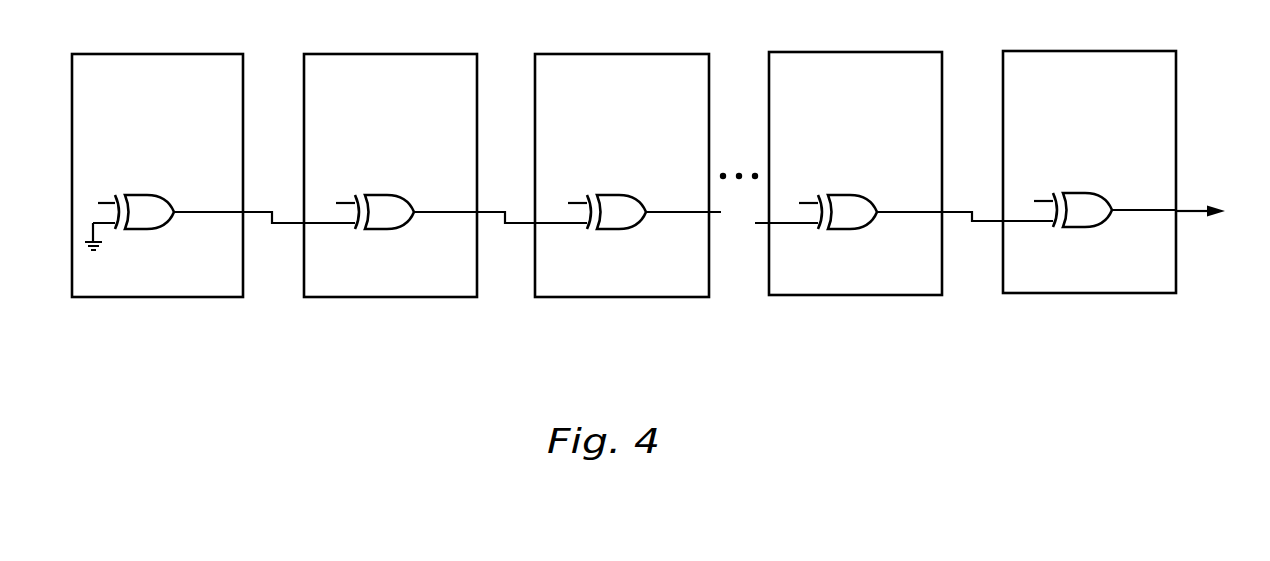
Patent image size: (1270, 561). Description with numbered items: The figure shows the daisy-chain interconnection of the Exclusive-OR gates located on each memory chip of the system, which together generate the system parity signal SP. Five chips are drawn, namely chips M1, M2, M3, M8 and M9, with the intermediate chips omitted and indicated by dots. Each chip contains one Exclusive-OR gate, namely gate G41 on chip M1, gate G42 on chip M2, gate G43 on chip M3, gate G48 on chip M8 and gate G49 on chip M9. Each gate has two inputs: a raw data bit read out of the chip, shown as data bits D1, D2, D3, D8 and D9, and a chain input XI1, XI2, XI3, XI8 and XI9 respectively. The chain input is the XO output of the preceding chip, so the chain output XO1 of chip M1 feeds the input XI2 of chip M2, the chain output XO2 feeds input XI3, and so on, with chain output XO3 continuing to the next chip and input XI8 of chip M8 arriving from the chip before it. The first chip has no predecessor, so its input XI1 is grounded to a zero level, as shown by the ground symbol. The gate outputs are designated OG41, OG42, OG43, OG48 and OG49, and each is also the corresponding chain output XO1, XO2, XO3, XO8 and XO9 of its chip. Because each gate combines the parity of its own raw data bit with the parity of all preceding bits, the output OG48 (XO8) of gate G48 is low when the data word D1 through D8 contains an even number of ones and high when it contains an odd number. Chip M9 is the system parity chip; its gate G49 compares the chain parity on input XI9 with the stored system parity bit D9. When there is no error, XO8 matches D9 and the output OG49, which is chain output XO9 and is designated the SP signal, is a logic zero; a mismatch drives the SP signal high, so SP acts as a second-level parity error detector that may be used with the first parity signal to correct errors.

The memory chip M1 is at (157, 175).
The memory chip M2 is at (390, 175).
The memory chip M3 is at (622, 175).
The memory chip M8 is at (855, 173).
The system parity chip M9 is at (1089, 172).
The Exclusive-OR gate G41 is at (137, 202).
The Exclusive-OR gate G42 is at (376, 202).
The Exclusive-OR gate G43 is at (608, 202).
The Exclusive-OR gate G48 is at (839, 202).
The Exclusive-OR gate G49 is at (1074, 200).
The raw data bit D1 is at (96, 203).
The raw data bit D2 is at (332, 203).
The raw data bit D3 is at (564, 203).
The raw data bit D8 is at (795, 203).
The system parity bit D9 is at (1030, 201).
The XI input XI1 is at (108, 225).
The XI input XI2 is at (335, 223).
The XI input XI3 is at (567, 223).
The XI input XI8 is at (798, 223).
The XI input XI9 is at (1033, 221).
The gate output OG41 is at (264, 206).
The gate output OG42 is at (500, 206).
The gate output OG43 is at (683, 201).
The gate output OG48 is at (965, 205).
The gate output OG49 is at (1144, 199).
The XO output XO1 is at (208, 227).
The XO output XO2 is at (445, 227).
The XO output XO3 is at (677, 227).
The XO output XO8 is at (909, 227).
The XO output XO9 is at (1144, 225).
The system parity signal SP is at (1214, 209).